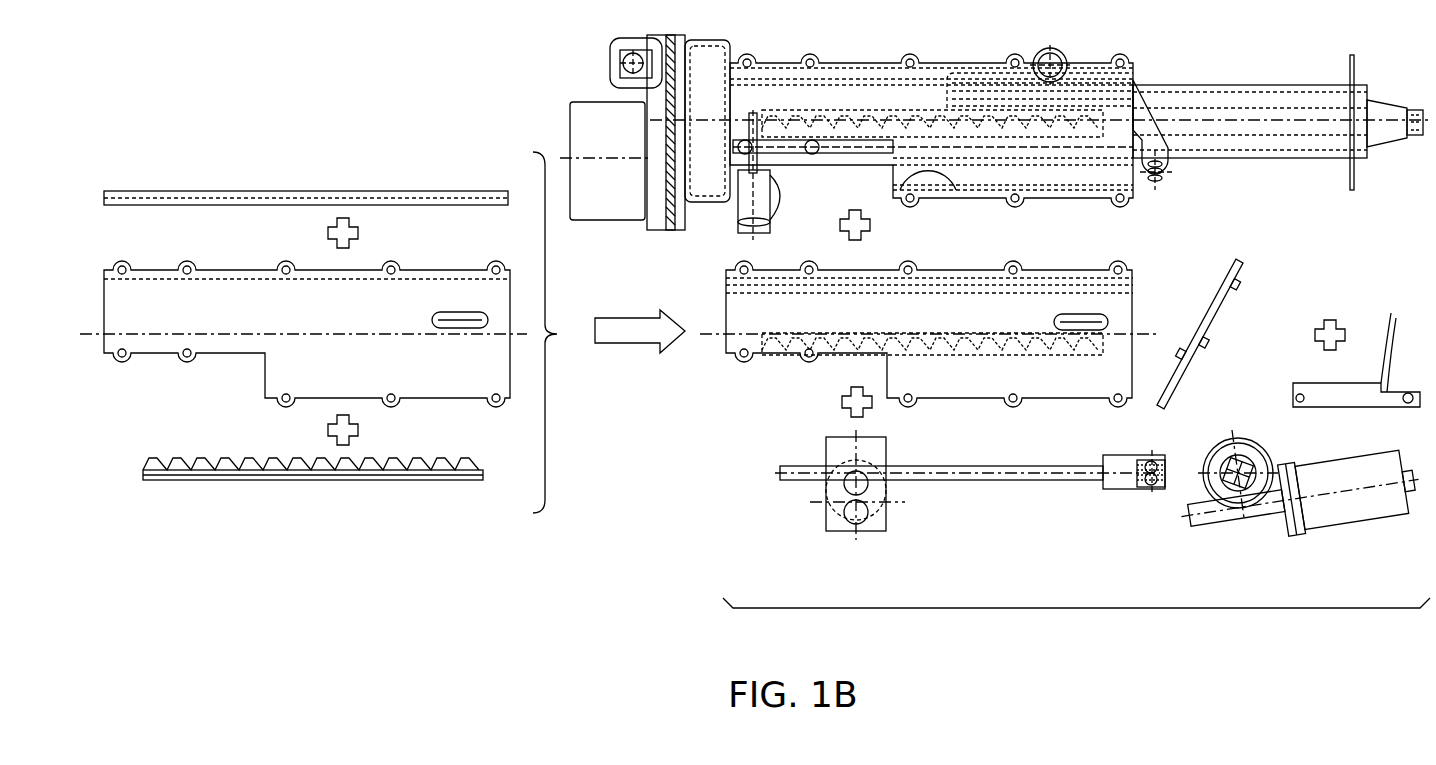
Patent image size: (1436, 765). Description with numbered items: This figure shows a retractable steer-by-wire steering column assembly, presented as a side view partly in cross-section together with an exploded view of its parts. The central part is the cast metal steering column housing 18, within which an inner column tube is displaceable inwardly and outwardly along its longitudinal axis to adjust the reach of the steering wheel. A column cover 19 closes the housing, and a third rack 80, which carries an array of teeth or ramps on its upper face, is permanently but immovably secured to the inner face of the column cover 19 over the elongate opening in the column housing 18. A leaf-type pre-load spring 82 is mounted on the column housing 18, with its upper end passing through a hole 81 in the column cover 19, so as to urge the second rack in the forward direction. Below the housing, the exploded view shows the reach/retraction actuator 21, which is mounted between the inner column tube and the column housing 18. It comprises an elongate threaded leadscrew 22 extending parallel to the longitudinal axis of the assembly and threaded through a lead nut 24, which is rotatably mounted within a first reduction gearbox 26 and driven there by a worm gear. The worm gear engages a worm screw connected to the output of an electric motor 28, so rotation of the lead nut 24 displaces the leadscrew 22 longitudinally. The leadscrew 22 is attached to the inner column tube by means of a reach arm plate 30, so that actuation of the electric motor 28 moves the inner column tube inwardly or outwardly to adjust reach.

The steering column housing 18 is at (500, 355).
The column cover 19 is at (740, 306).
The reach/retraction actuator 21 is at (1076, 625).
The leadscrew 22 is at (962, 480).
The lead nut 24 is at (838, 447).
The first reduction gearbox 26 is at (1243, 440).
The electric motor 28 is at (1357, 505).
The reach arm plate 30 is at (1158, 155).
The third rack 80 is at (155, 489).
The hole 81 is at (472, 311).
The pre-load spring 82 is at (1368, 326).